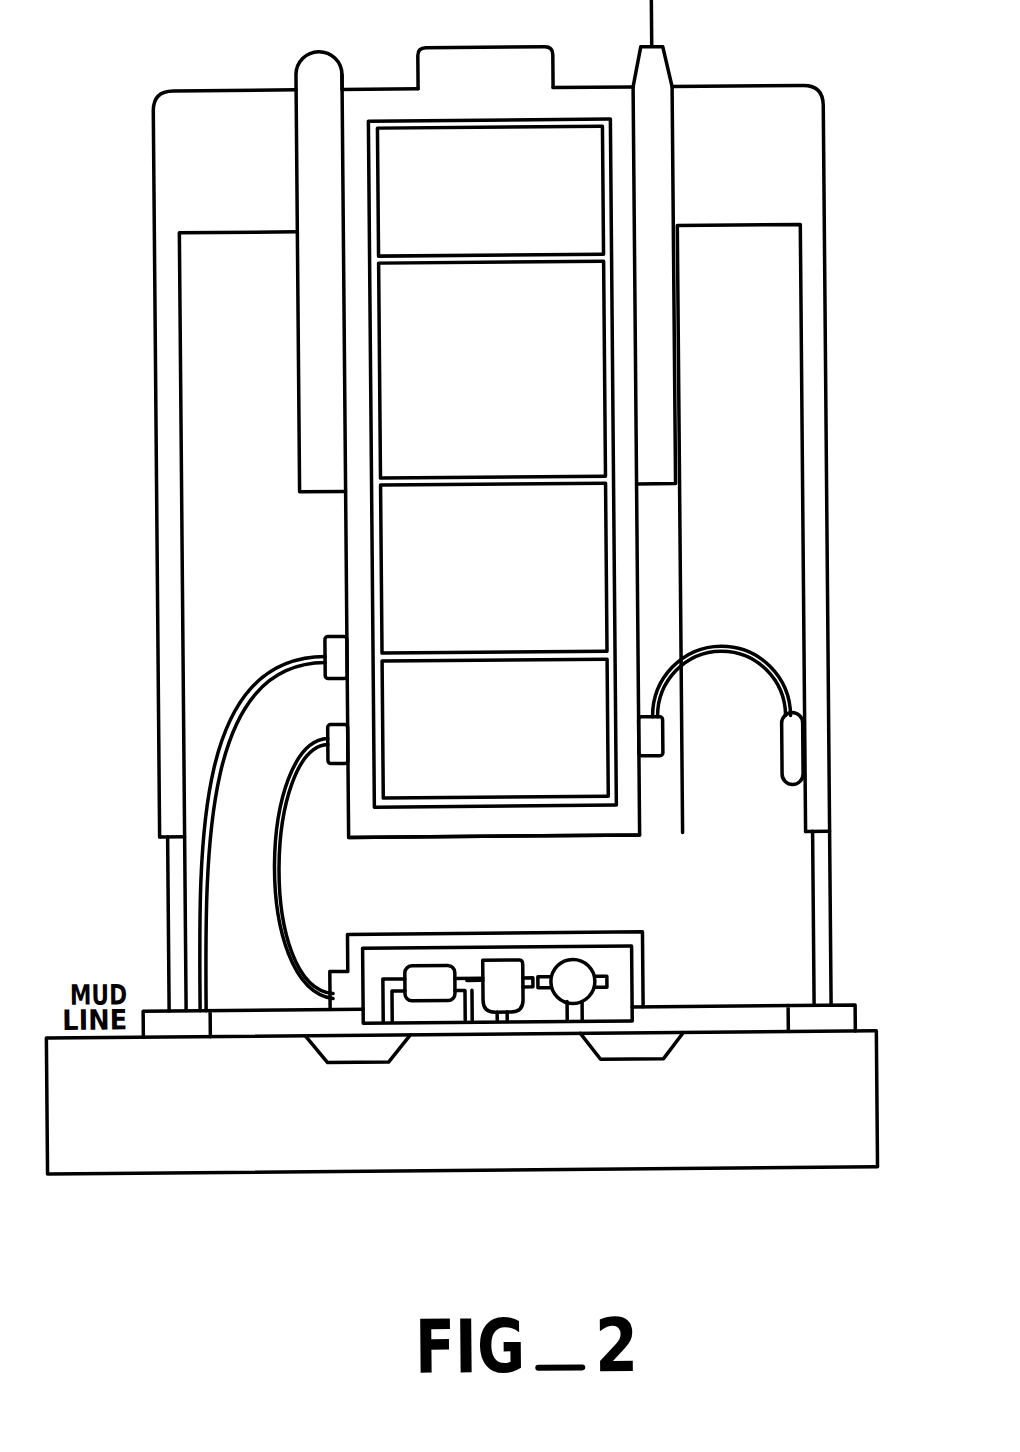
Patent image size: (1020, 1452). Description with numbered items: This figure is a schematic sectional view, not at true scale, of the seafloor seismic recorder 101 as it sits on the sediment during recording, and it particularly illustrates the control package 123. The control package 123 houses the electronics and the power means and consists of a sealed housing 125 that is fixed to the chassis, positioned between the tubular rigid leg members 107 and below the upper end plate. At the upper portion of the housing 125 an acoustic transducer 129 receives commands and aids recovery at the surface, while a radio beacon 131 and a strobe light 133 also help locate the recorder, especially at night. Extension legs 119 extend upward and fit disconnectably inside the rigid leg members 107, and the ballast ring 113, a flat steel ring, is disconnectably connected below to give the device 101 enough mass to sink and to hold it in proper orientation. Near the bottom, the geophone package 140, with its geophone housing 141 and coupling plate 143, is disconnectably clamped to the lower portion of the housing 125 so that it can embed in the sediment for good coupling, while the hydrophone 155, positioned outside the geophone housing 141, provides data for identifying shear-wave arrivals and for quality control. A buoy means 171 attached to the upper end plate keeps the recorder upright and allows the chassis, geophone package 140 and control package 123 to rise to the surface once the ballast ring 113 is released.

The seafloor seismic recorder 101 is at (142, 315).
The rigid leg members 107 is at (157, 491).
The ballast ring 113 is at (245, 1007).
The extension legs 119 is at (164, 921).
The control package 123 is at (640, 561).
The sealed housing 125 is at (356, 837).
The acoustic transducer 129 is at (501, 46).
The radio beacon 131 is at (672, 56).
The strobe light 133 is at (308, 53).
The geophone package 140 is at (550, 908).
The geophone housing 141 is at (637, 926).
The coupling plate 143 is at (645, 1062).
The hydrophone 155 is at (781, 752).
The buoy means 171 is at (827, 148).